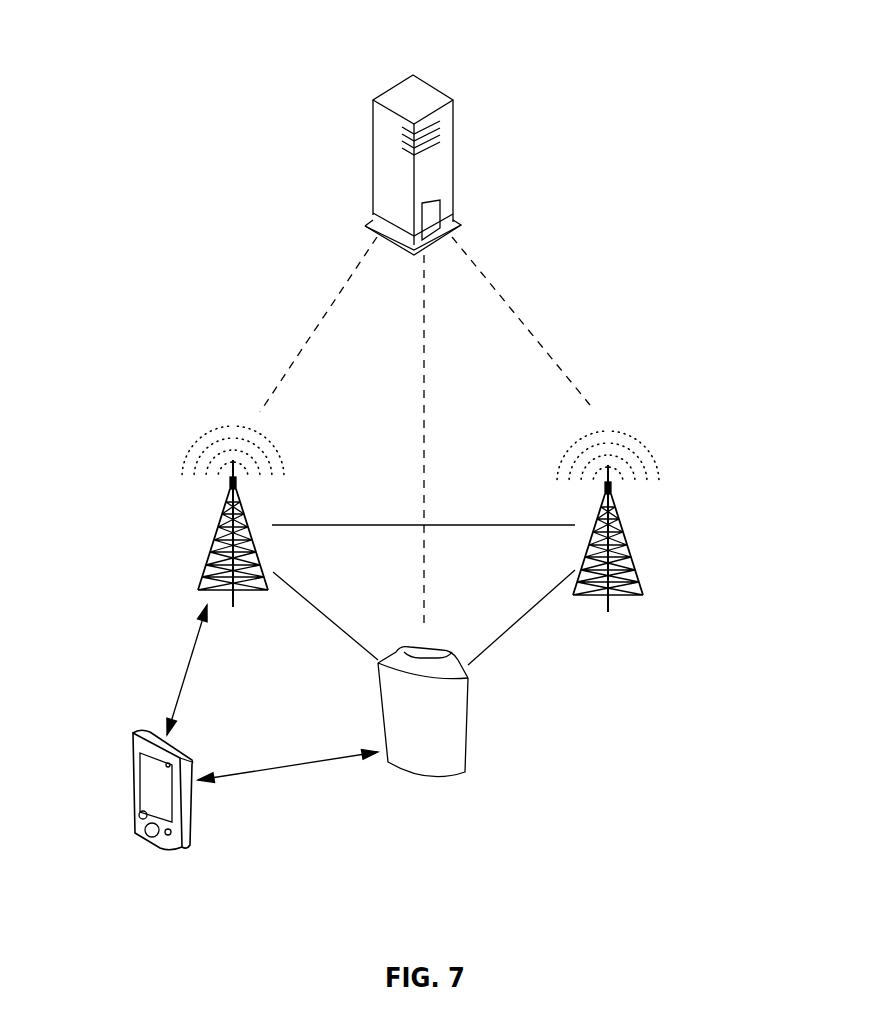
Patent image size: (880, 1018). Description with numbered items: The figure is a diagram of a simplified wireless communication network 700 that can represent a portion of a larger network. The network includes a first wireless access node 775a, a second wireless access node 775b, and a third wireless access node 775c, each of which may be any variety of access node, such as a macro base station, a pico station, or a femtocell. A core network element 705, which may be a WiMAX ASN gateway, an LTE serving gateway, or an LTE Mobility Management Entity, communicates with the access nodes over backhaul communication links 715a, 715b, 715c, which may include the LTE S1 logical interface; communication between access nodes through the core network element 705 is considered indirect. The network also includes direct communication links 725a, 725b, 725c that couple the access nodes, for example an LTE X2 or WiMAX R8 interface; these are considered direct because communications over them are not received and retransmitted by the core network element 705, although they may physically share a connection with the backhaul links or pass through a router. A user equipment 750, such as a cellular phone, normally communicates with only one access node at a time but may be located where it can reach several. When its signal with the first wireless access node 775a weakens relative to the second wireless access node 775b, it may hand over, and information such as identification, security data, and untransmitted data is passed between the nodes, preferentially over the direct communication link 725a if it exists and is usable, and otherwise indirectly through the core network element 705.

The wireless communication network 700 is at (722, 63).
The core network element 705 is at (453, 120).
The backhaul communication link 715a is at (323, 317).
The backhaul communication link 715b is at (424, 432).
The backhaul communication link 715c is at (528, 328).
The direct communication link 725a is at (320, 615).
The direct communication link 725b is at (520, 618).
The direct communication link 725c is at (390, 525).
The user equipment 750 is at (130, 800).
The first wireless access node 775a is at (215, 525).
The second wireless access node 775b is at (468, 785).
The third wireless access node 775c is at (633, 542).